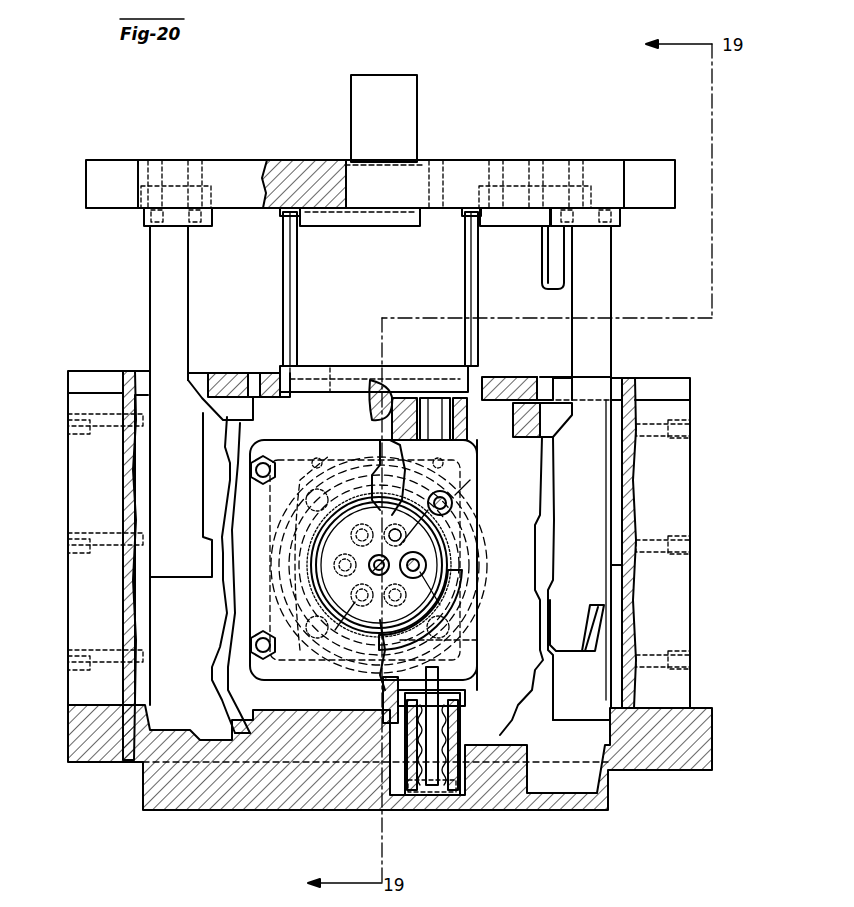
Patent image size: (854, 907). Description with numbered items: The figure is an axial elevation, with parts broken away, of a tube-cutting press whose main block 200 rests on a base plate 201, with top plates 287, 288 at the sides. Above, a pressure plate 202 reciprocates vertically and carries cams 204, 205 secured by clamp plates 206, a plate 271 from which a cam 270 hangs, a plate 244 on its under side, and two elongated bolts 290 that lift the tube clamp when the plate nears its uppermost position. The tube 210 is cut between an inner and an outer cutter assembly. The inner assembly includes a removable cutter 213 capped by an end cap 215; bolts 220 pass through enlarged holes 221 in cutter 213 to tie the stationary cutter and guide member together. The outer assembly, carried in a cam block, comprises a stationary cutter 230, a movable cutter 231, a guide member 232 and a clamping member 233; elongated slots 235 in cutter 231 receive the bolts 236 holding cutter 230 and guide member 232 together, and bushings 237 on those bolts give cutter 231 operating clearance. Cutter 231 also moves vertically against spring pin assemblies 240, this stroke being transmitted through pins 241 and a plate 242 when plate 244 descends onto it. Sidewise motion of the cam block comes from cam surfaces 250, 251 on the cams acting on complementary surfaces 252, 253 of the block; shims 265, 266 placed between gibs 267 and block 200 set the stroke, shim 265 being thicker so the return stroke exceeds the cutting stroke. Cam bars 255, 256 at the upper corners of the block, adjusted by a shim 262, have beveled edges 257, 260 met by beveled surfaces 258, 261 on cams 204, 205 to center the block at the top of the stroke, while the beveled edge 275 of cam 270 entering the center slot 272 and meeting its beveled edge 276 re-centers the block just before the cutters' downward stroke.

The main block 200 is at (680, 639).
The base plate 201 is at (160, 810).
The pressure plate 202 is at (292, 172).
The cam 204 is at (152, 305).
The cam 205 is at (600, 297).
The clamp plates 206 is at (147, 212).
The tube 210 is at (420, 556).
The removable cutter 213 is at (410, 541).
The end cap 215 is at (426, 567).
The bolts 220 is at (430, 591).
The enlarged holes 221 is at (435, 578).
The stationary cutter 230 is at (480, 642).
The movable cutter 231 is at (420, 490).
The guide member 232 is at (385, 463).
The clamping member 233 is at (255, 614).
The elongated slots 235 is at (452, 504).
The bolts 236 is at (440, 496).
The bushings 237 is at (445, 501).
The spring pin assemblies 240 is at (450, 698).
The pins 241 is at (452, 419).
The plate 242 is at (405, 370).
The plate 244 is at (375, 220).
The cam surface 250 is at (152, 498).
The cam surface 251 is at (550, 537).
The cam surface 252 is at (170, 524).
The cam surface 253 is at (537, 565).
The cam bar 255 is at (230, 390).
The cam bar 256 is at (528, 410).
The beveled edge 257 is at (212, 461).
The beveled surface 258 is at (202, 398).
The beveled edge 260 is at (545, 456).
The beveled surface 261 is at (553, 421).
The shim 262 is at (255, 397).
The shim 265 is at (122, 409).
The shim 266 is at (635, 466).
The gibs 267 is at (125, 437).
The cam 270 is at (543, 281).
The plate 271 is at (516, 226).
The center slot 272 is at (575, 378).
The beveled edge 275 is at (543, 290).
The beveled edge 276 is at (550, 410).
The top plate 287 is at (88, 369).
The top plate 288 is at (675, 380).
The elongated bolts 290 is at (282, 273).